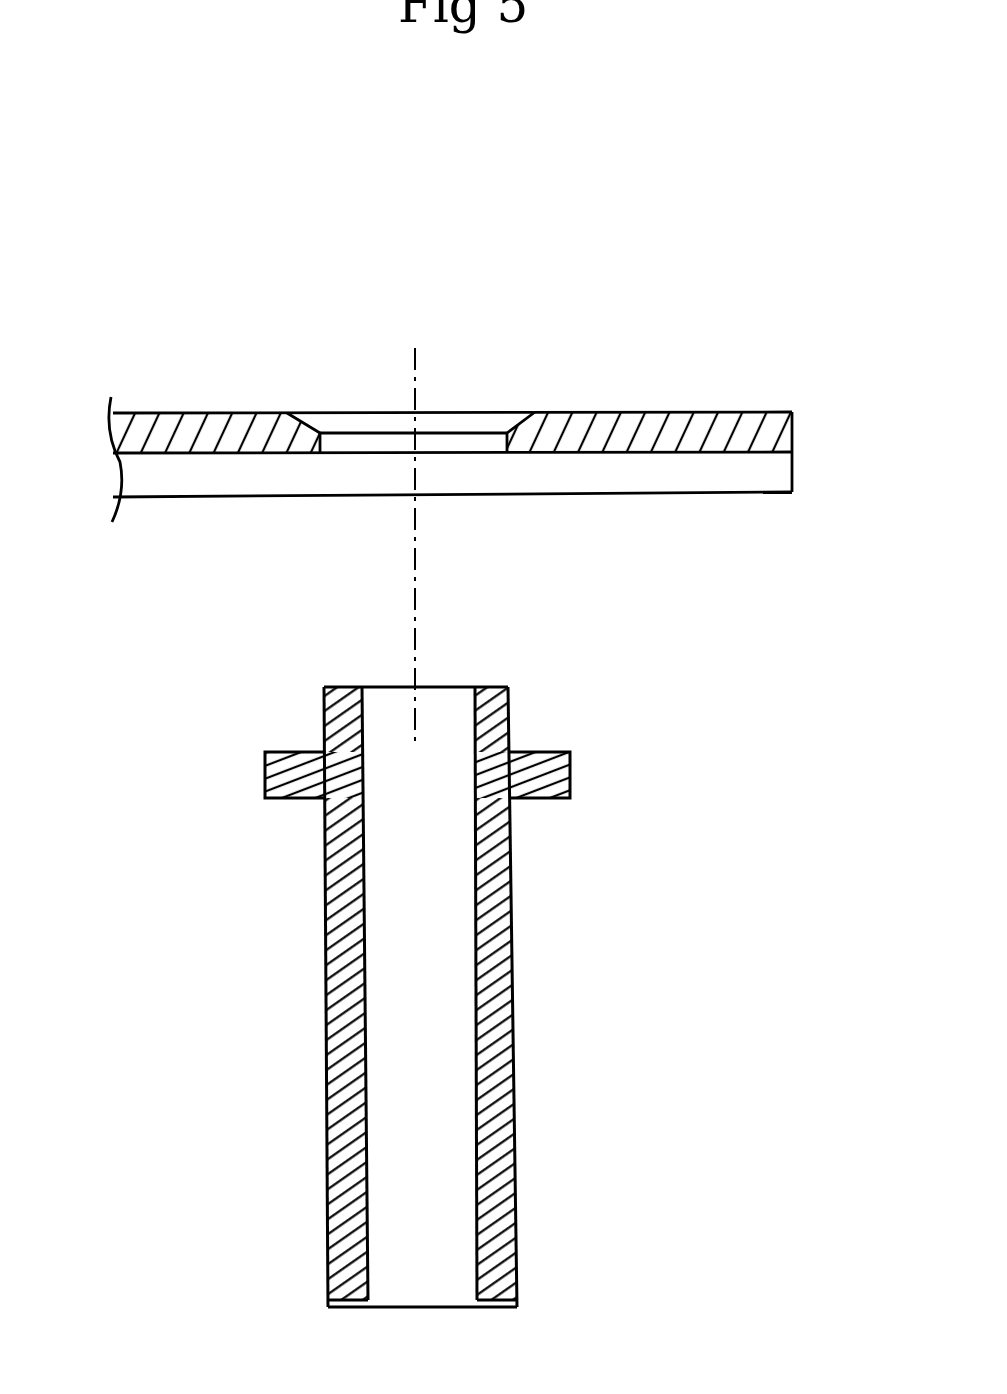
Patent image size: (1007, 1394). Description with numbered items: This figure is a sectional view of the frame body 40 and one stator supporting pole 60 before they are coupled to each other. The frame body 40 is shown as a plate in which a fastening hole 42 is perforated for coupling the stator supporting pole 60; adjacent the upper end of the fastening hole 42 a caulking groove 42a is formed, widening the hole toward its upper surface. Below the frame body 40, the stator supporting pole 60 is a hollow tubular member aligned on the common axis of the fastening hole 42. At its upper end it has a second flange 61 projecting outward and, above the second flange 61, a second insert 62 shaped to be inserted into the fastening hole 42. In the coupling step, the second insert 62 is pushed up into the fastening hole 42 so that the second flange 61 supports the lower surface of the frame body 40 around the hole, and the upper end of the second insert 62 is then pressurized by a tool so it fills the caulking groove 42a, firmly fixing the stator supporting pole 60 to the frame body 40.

The frame body 40 is at (660, 412).
The fastening hole 42 is at (505, 412).
The caulking groove 42a is at (315, 413).
The stator supporting pole 60 is at (495, 1080).
The second flange 61 is at (546, 777).
The second insert 62 is at (486, 690).